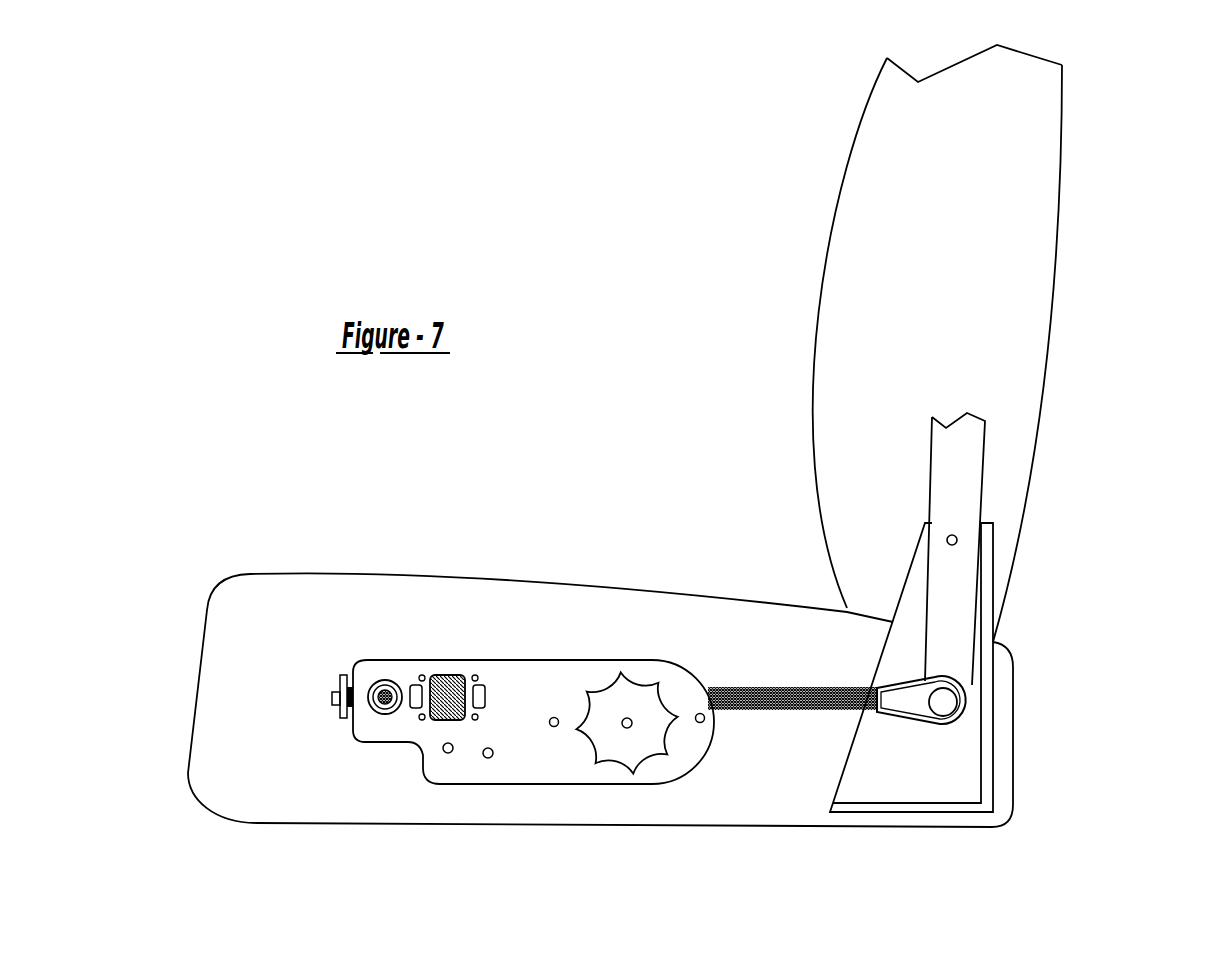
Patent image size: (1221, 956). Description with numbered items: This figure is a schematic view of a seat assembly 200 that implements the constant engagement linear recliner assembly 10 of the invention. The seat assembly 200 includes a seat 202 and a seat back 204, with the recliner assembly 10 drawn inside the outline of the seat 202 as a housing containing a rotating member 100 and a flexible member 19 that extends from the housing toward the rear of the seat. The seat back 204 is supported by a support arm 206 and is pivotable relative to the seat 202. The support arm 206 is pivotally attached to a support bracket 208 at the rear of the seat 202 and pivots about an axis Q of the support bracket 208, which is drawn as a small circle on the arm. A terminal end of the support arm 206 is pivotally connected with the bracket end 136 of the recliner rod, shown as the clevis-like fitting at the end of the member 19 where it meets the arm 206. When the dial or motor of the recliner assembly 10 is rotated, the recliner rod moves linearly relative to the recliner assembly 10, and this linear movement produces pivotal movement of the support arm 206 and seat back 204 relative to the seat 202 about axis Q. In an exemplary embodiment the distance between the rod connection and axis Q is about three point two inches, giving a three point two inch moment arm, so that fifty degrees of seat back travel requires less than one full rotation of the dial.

The seat assembly 200 is at (580, 409).
The seat 202 is at (275, 595).
The seat back 204 is at (1025, 178).
The support arm 206 is at (962, 467).
The support bracket 208 is at (970, 747).
The constant engagement linear recliner assembly 10 is at (421, 766).
The cable 19 is at (763, 685).
The gear / rotating member 100 is at (652, 735).
The bracket end 136 is at (913, 703).
The axis Q is at (957, 540).